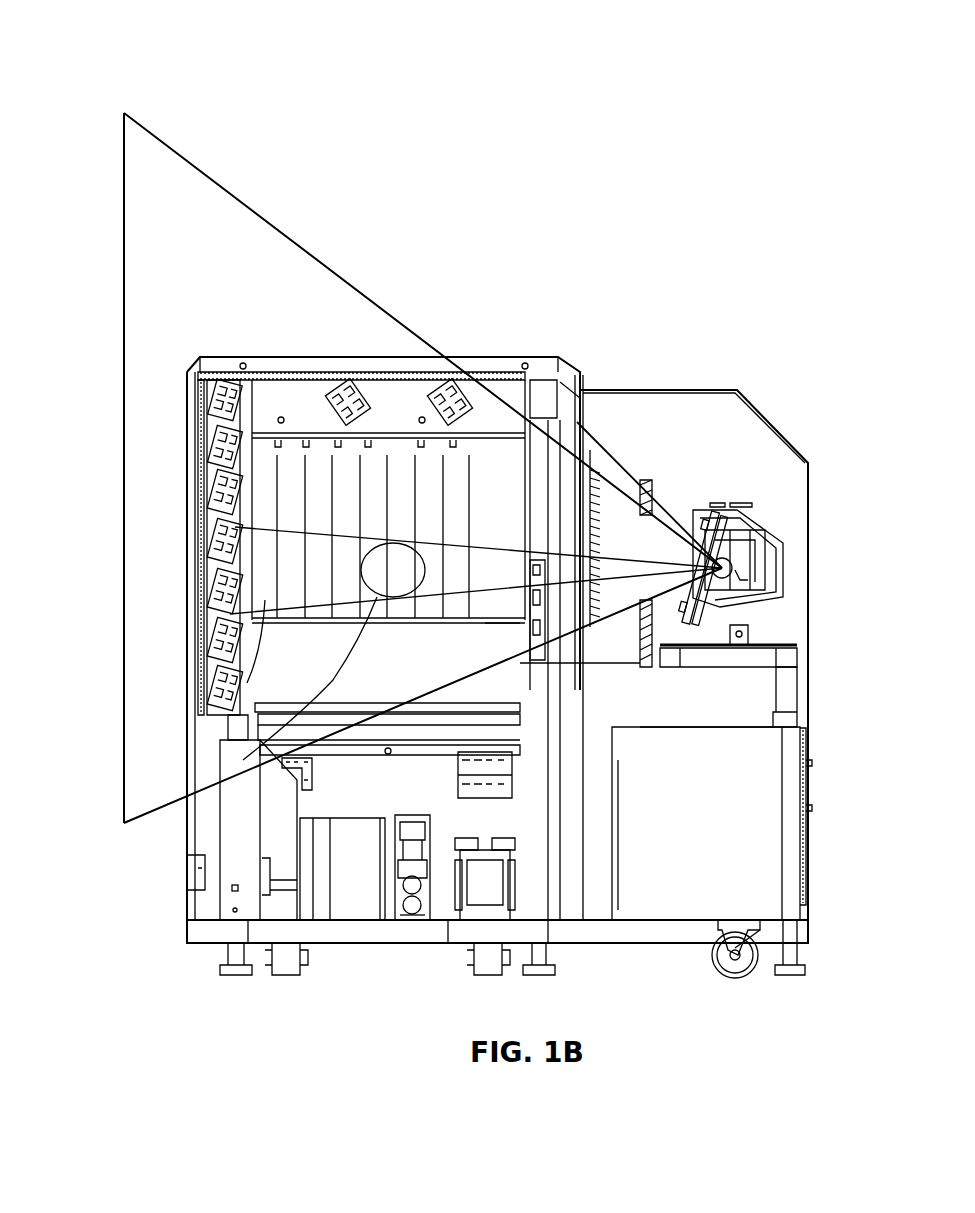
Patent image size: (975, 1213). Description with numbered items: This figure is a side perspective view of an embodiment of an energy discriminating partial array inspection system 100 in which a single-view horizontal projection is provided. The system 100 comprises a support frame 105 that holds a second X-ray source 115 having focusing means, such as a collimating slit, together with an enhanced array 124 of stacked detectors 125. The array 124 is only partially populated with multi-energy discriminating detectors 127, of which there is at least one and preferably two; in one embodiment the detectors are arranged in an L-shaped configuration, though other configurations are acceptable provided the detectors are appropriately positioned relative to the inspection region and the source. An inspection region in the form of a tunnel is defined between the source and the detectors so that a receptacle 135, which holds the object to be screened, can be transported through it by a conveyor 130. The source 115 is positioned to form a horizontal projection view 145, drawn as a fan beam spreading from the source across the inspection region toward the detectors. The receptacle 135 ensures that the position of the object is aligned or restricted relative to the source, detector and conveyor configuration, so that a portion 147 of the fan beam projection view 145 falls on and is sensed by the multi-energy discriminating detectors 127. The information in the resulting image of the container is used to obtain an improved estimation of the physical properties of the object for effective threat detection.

The inspection system 100 is at (133, 48).
The support frame 105 is at (698, 398).
The second X-ray source 115 is at (768, 560).
The enhanced array 124 is at (475, 348).
The stacked detectors 125 is at (338, 378).
The multi-energy discriminating detectors 127 is at (205, 540).
The conveyor 130 is at (485, 623).
The receptacle 135 is at (722, 568).
The horizontal projection view 145 is at (138, 196).
The portion of the fan beam projection view 147 is at (247, 683).